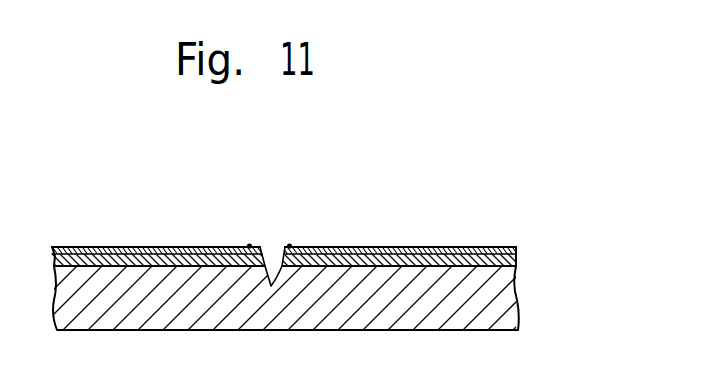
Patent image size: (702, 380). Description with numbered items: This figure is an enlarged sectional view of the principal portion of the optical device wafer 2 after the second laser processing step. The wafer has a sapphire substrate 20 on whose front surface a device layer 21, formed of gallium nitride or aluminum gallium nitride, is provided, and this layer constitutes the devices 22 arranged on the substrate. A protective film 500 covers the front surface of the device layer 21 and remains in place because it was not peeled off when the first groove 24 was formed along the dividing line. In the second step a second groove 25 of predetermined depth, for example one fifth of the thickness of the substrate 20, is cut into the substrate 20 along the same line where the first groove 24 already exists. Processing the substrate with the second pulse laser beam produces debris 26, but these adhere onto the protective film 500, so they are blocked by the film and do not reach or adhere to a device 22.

The optical device wafer 2 is at (379, 180).
The sapphire substrate 20 is at (518, 304).
The device layer 21 is at (519, 262).
The devices 22 is at (167, 247).
The first groove 24 is at (263, 246).
The second groove 25 is at (276, 247).
The debris 26 is at (249, 244).
The protective film 500 is at (120, 247).